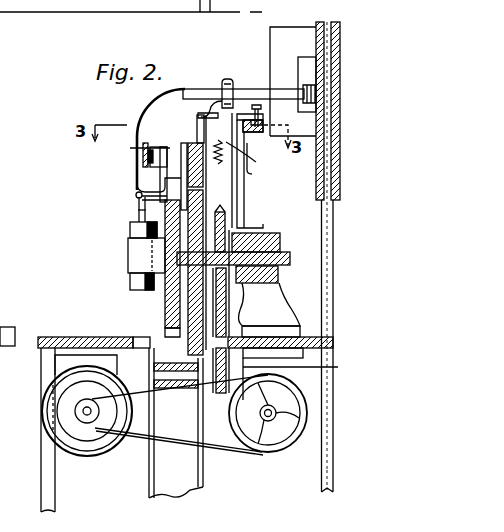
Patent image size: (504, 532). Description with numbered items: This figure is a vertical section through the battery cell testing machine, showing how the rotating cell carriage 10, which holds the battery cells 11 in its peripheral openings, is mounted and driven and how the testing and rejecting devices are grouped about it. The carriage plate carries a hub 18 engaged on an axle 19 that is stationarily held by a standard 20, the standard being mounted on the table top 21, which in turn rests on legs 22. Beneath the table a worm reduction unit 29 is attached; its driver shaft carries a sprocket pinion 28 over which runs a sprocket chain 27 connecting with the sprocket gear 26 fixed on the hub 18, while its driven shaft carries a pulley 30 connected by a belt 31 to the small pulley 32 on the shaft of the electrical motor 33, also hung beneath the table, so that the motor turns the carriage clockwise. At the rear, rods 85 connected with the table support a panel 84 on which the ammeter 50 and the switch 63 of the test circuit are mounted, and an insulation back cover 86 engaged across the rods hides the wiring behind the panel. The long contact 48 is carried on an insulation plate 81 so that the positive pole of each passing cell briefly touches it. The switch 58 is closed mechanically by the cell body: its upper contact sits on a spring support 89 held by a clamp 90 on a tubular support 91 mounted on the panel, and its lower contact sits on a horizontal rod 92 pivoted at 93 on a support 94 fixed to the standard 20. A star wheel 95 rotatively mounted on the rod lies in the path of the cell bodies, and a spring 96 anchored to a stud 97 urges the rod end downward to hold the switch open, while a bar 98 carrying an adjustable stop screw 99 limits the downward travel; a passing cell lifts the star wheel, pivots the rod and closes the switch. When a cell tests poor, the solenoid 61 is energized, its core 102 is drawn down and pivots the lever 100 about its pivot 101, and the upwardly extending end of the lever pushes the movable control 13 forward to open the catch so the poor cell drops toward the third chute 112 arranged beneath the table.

The movable cell carriage 10 is at (160, 332).
The battery cell 11 is at (168, 150).
The movable control 13 is at (181, 176).
The hub 18 is at (282, 246).
The axle 19 is at (291, 262).
The standard 20 is at (280, 281).
The table top 21 is at (333, 346).
The leg 22 is at (334, 452).
The sprocket gear 26 is at (228, 215).
The sprocket chain 27 is at (229, 320).
The sprocket pinion 28 is at (214, 397).
The worm reduction unit 29 is at (301, 379).
The pulley 30 is at (307, 412).
The belt 31 is at (147, 448).
The small pulley 32 is at (75, 413).
The electrical motor 33 is at (56, 428).
The long contact 48 is at (147, 157).
The ammeter 50 is at (270, 32).
The switch 58 is at (206, 115).
The solenoid 61 is at (130, 281).
The switch 63 is at (307, 60).
The insulation plate 81 is at (140, 134).
The panel 84 is at (318, 22).
The rod 85 is at (334, 213).
The insulation back cover 86 is at (341, 44).
The spring support 89 is at (223, 96).
The clamp 90 is at (232, 83).
The tubular support 91 is at (243, 96).
The horizontal rod 92 is at (251, 155).
The pivot 93 is at (246, 135).
The support 94 is at (246, 210).
The star wheel 95 is at (199, 122).
The spring 96 is at (234, 167).
The stud 97 is at (252, 174).
The bar 98 is at (263, 123).
The adjustable stop screw 99 is at (262, 106).
The lever 100 is at (136, 197).
The pivot 101 is at (142, 212).
The core 102 is at (147, 220).
The third chute 112 is at (159, 499).